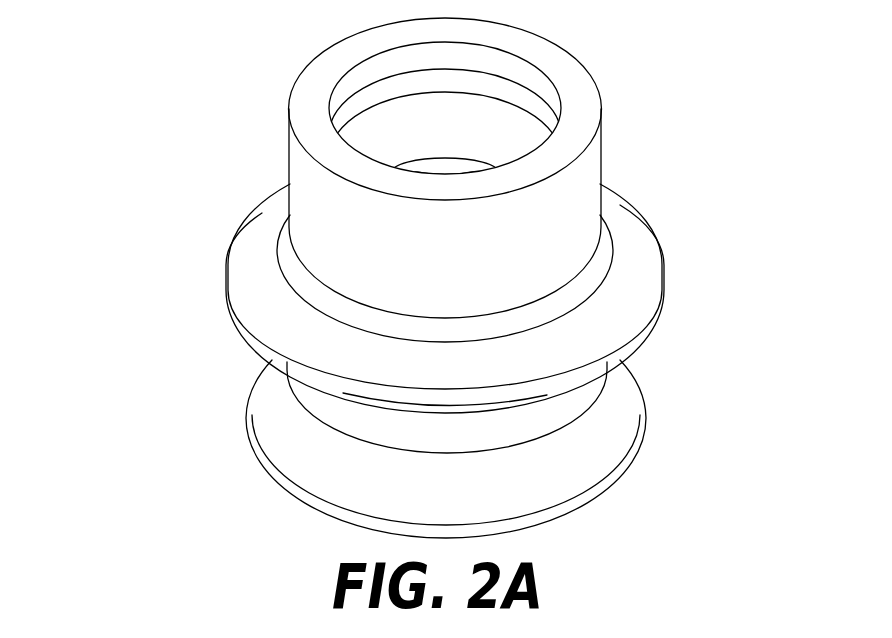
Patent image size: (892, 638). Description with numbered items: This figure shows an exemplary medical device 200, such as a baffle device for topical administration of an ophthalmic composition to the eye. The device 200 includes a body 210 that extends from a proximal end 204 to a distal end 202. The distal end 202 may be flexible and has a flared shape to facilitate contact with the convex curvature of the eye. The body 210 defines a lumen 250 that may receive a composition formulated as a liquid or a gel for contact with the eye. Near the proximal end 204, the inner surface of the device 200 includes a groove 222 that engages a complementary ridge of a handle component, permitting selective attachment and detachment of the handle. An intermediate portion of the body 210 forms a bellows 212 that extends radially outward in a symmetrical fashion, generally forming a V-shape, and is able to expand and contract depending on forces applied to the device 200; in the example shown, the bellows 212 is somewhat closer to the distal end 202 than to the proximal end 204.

The medical device 200 is at (129, 184).
The distal end 202 is at (645, 423).
The proximal end 204 is at (563, 57).
The body 210 is at (303, 176).
The bellows 212 is at (662, 275).
The groove 222 is at (513, 95).
The lumen 250 is at (396, 121).